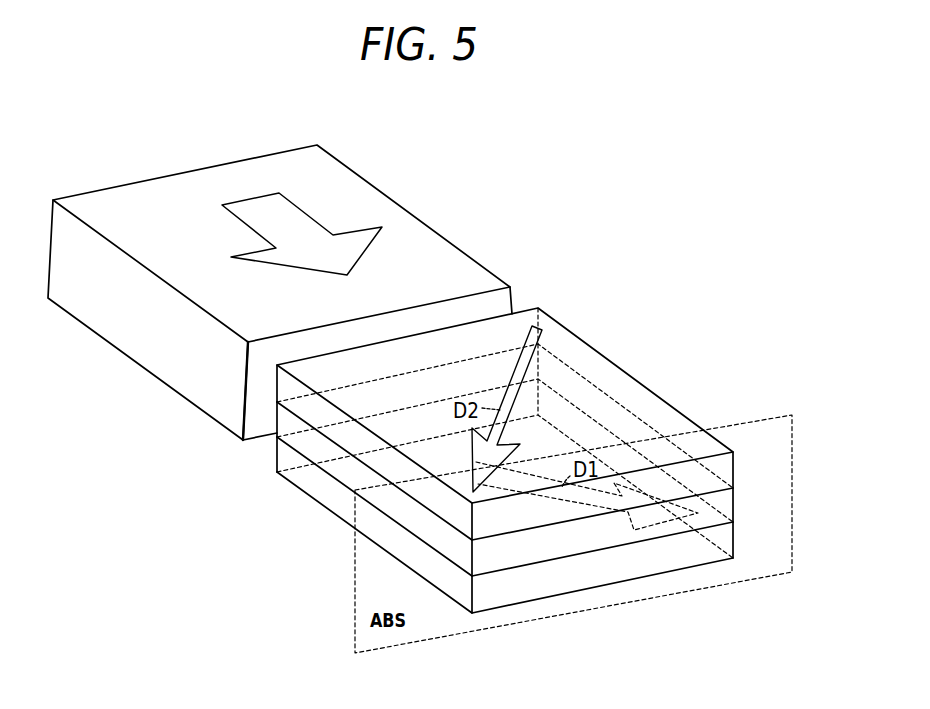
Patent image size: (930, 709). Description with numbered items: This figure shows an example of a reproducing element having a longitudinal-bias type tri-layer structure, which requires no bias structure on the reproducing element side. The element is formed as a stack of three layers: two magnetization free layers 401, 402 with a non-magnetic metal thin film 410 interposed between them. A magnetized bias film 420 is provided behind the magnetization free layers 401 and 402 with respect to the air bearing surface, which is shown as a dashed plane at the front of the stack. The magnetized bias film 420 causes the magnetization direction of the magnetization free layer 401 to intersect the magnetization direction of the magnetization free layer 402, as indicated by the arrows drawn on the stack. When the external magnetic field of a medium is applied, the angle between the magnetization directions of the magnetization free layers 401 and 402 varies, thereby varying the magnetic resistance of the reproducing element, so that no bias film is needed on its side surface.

The magnetized bias film 420 is at (430, 230).
The magnetization free layer 402 is at (735, 467).
The non-magnetic metal thin film 410 is at (735, 502).
The magnetization free layer 401 is at (735, 540).